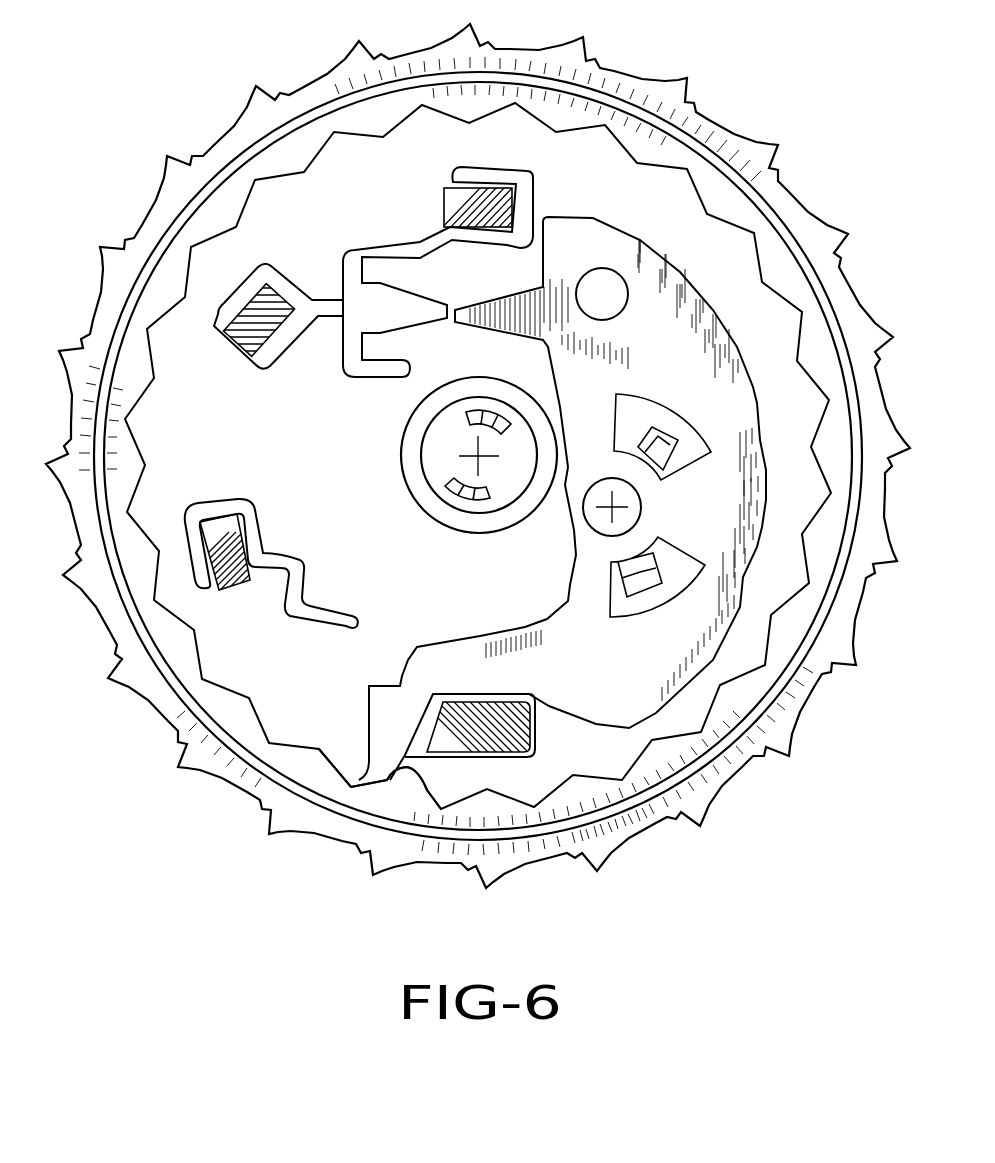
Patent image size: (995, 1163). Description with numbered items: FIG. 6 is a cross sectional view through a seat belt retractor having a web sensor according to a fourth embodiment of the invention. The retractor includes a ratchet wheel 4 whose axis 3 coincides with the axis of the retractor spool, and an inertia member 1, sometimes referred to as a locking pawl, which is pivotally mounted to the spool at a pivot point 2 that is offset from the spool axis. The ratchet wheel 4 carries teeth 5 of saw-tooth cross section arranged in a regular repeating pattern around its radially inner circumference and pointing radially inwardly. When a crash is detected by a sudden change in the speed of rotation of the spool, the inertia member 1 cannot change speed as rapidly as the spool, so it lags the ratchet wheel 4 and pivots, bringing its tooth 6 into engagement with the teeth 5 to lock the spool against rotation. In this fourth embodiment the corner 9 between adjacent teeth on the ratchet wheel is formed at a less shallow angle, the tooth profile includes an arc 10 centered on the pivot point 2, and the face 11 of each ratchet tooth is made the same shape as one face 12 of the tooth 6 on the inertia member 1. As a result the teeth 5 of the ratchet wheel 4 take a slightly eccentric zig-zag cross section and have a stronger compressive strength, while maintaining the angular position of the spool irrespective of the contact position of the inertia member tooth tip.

The inertia member 1 is at (615, 670).
The pivot point 2 is at (612, 507).
The axis 3 is at (479, 455).
The ratchet wheel 4 is at (596, 799).
The teeth 5 is at (270, 746).
The tooth 6 is at (363, 778).
The corner 9 is at (340, 795).
The arc 10 is at (335, 743).
The face 11 is at (378, 789).
The face of the tooth 12 is at (430, 803).